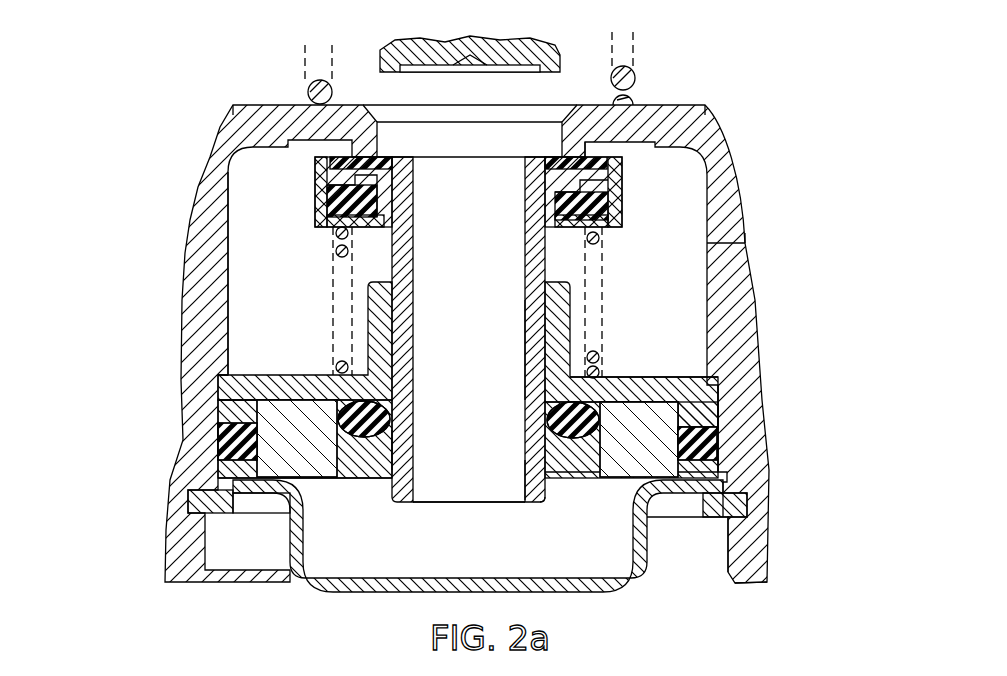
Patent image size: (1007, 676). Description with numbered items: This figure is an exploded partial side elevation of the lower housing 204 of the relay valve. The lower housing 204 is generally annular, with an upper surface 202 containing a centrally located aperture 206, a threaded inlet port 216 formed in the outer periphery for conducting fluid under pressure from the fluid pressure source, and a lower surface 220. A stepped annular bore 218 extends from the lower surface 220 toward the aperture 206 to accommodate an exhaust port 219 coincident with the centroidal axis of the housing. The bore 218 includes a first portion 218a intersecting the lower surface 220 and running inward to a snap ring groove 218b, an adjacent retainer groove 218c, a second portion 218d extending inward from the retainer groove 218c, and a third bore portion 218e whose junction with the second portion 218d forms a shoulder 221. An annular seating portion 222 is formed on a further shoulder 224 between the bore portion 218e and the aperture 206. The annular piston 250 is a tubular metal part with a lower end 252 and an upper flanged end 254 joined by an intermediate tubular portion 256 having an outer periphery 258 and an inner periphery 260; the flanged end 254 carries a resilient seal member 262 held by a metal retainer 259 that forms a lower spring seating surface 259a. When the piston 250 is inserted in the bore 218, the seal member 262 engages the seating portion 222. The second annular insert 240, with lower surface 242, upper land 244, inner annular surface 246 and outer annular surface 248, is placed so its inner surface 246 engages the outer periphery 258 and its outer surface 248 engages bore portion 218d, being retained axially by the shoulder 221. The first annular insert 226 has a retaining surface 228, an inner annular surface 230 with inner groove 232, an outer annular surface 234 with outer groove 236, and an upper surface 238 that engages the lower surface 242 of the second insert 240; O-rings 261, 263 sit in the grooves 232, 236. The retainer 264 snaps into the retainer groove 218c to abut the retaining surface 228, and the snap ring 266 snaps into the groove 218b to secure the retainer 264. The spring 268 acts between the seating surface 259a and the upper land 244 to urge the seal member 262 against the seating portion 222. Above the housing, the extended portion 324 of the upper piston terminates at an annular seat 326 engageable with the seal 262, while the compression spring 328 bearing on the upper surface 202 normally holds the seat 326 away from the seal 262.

The upper surface 202 is at (246, 104).
The lower housing 204 is at (193, 220).
The aperture 206 is at (562, 140).
The threaded inlet port 216 is at (745, 243).
The stepped annular bore 218 is at (230, 307).
The first bore portion 218a is at (735, 556).
The snap ring groove 218b is at (740, 510).
The retainer groove 218c is at (722, 488).
The second bore portion 218d is at (705, 468).
The third bore portion 218e is at (708, 197).
The exhaust port 219 is at (455, 500).
The lower surface 220 is at (750, 588).
The shoulder 221 is at (218, 378).
The annular seating portion 222 is at (580, 152).
The shoulder 224 is at (633, 145).
The first annular insert 226 is at (218, 480).
The retaining surface 228 is at (353, 478).
The inner annular surface 230 is at (397, 449).
The inner groove 232 is at (340, 412).
The outer annular surface 234 is at (215, 445).
The outer groove 236 is at (257, 440).
The upper surface 238 is at (305, 395).
The second annular insert 240 is at (225, 402).
The lower surface 242 is at (615, 408).
The upper land 244 is at (636, 376).
The inner annular surface 246 is at (555, 307).
The outer annular surface 248 is at (720, 404).
The annular piston 250 is at (525, 383).
The lower end 252 is at (545, 504).
The upper flanged end 254 is at (585, 180).
The intermediate tubular portion 256 is at (533, 270).
The outer periphery 258 is at (570, 480).
The metal retainer 259 is at (315, 214).
The spring seating surface 259a is at (600, 233).
The inner periphery 260 is at (525, 466).
The sealing O-ring 261 is at (575, 440).
The resilient seal member 262 is at (330, 180).
The sealing O-ring 263 is at (700, 440).
The retainer 264 is at (355, 584).
The snap ring 266 is at (220, 512).
The spring 268 is at (336, 250).
The extended portion 324 is at (470, 42).
The annular seat 326 is at (390, 72).
The compression spring 328 is at (310, 88).